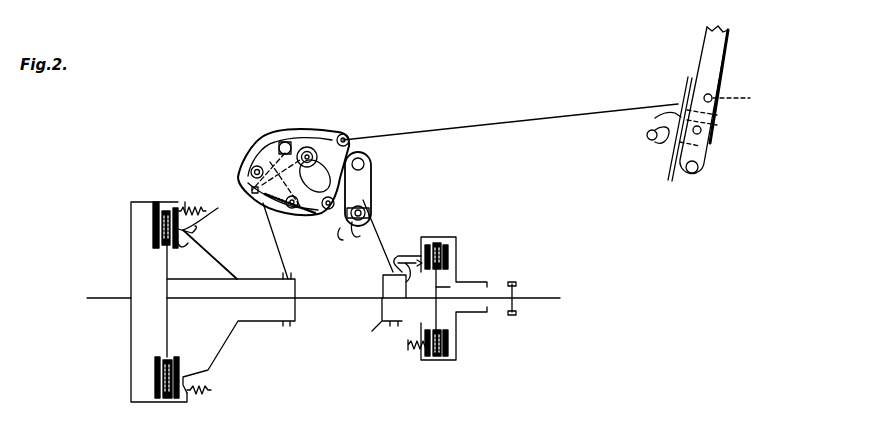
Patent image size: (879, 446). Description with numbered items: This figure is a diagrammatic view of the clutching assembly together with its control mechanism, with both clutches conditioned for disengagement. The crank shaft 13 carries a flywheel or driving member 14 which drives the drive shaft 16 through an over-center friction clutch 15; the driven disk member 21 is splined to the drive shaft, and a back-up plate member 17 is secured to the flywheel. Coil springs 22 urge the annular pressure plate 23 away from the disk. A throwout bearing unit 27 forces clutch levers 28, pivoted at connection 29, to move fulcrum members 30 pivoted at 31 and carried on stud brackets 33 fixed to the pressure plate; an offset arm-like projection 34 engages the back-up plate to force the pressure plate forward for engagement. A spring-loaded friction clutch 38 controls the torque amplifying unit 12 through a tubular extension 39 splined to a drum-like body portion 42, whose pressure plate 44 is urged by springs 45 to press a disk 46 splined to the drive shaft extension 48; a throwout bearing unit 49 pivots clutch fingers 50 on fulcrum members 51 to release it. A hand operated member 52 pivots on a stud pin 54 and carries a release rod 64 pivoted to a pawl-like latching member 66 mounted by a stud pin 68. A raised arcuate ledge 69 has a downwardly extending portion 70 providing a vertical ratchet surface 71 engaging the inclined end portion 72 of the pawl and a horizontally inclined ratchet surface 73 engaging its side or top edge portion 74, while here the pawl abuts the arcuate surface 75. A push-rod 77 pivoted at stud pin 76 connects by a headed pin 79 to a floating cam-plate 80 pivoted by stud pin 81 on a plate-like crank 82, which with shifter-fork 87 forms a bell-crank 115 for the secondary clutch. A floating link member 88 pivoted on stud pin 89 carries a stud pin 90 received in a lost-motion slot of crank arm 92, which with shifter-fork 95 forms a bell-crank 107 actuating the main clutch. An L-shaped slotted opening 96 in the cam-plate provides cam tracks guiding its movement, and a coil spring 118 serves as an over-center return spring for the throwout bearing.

The torque amplifying unit 12 is at (516, 273).
The crank shaft 13 is at (94, 298).
The flywheel or clutch driving member 14 is at (134, 202).
The over-center friction clutch 15 is at (166, 188).
The drive shaft 16 is at (183, 298).
The back-up or cover plate member 17 is at (183, 375).
The driven disk member 21 is at (160, 292).
The coil springs 22 is at (185, 207).
The annular pressure plate 23 is at (174, 248).
The throwout bearing unit 27 is at (270, 322).
The clutch levers 28 is at (214, 259).
The pivotal connection 29 is at (238, 278).
The fulcrum members 30 is at (203, 219).
The pivot 31 is at (196, 230).
The stud brackets or mounting posts 33 is at (178, 362).
The offset arm-like projection 34 is at (188, 243).
The spring-loaded friction clutch 38 is at (448, 230).
The tubular extension 39 is at (473, 281).
The drum-like body or bell portion 42 is at (457, 240).
The pressure plate 44 is at (427, 243).
The springs 45 is at (410, 348).
The disk 46 is at (453, 289).
The drive shaft extension 48 is at (405, 298).
The clutch throwout bearing unit 49 is at (372, 331).
The clutch levers or fingers 50 is at (398, 256).
The fulcrum members 51 is at (396, 286).
The handle or hand operated member 52 is at (739, 43).
The stud or dowel pin 54 is at (698, 170).
The release rod 64 is at (688, 77).
The pawl-like latching member 66 is at (670, 176).
The stud pin or dowel 68 is at (702, 131).
The raised arcuately-shaped ridge or ledge 69 is at (675, 112).
The downwardly extending portion 70 is at (647, 135).
The vertical ratchet surface 71 is at (672, 128).
The inclined end portion 72 is at (680, 136).
The horizontally inclined ratchet surface 73 is at (657, 142).
The side or top edge portion 74 is at (723, 119).
The arcuately-shaped surface 75 is at (655, 118).
The stud pin or dowel 76 is at (712, 96).
The push-rod 77 is at (421, 130).
The headed pin 79 is at (345, 135).
The floating cam-plate 80 is at (285, 142).
The stud or dowel pin 81 is at (326, 210).
The plate-like crank 82 is at (372, 182).
The shifter-fork or operating lever 87 is at (366, 232).
The floating link member 88 is at (265, 205).
The stud or dowel pin 89 is at (291, 209).
The stud or dowel pin 90 is at (305, 147).
The crank arm 92 is at (312, 148).
The shifter-fork or operating lever 95 is at (278, 256).
The L-shaped slotted opening 96 is at (256, 166).
The bell-crank 107 is at (248, 158).
The bell-crank 115 is at (381, 168).
The coil spring 118 is at (345, 239).